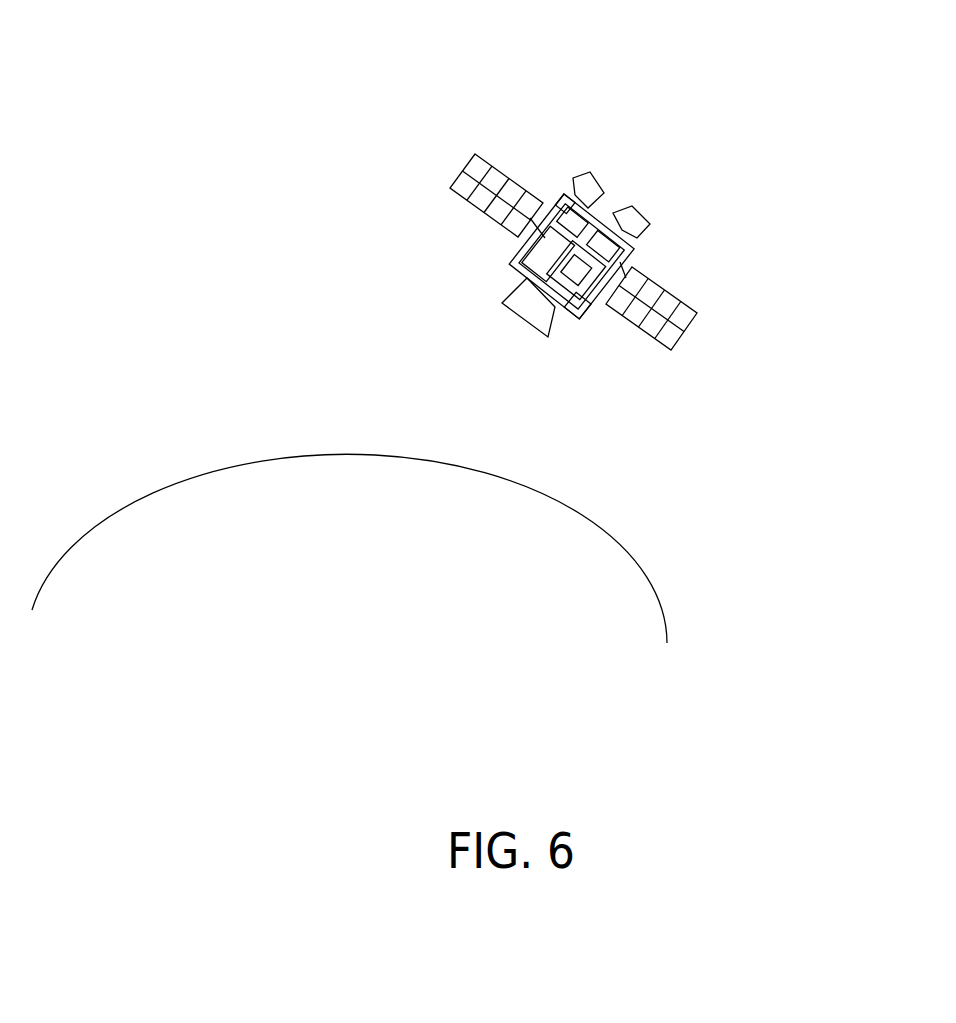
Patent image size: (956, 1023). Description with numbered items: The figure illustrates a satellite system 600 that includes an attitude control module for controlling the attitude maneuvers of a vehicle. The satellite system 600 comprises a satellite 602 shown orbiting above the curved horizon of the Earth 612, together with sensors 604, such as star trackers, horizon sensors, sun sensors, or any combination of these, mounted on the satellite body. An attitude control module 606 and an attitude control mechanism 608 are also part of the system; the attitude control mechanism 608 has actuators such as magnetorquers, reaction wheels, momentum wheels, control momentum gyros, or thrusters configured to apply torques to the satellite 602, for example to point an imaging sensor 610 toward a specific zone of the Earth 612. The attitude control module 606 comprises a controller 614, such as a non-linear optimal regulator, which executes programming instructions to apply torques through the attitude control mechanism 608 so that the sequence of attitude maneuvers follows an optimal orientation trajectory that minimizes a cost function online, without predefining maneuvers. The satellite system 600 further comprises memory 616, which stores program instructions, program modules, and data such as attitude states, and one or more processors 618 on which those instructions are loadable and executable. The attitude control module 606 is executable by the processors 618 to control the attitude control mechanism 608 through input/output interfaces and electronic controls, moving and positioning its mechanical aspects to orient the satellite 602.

The satellite system 600 is at (127, 147).
The satellite 602 is at (499, 274).
The sensors 604 is at (633, 202).
The attitude control module 606 is at (585, 303).
The attitude control mechanism 608 is at (634, 247).
The imaging sensor 610 is at (517, 327).
The Earth 612 is at (349, 548).
The controller 614 is at (598, 279).
The memory 616 is at (529, 244).
The processors 618 is at (559, 192).